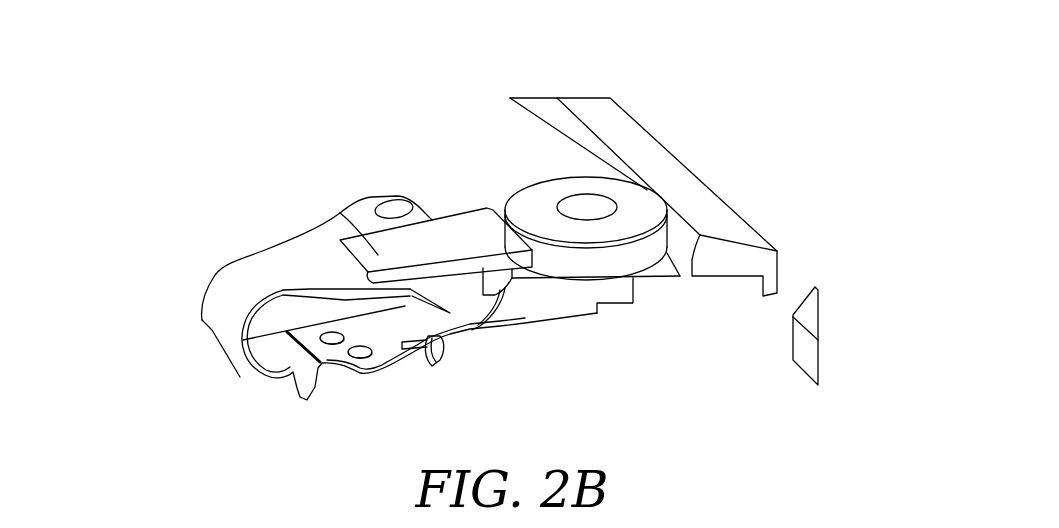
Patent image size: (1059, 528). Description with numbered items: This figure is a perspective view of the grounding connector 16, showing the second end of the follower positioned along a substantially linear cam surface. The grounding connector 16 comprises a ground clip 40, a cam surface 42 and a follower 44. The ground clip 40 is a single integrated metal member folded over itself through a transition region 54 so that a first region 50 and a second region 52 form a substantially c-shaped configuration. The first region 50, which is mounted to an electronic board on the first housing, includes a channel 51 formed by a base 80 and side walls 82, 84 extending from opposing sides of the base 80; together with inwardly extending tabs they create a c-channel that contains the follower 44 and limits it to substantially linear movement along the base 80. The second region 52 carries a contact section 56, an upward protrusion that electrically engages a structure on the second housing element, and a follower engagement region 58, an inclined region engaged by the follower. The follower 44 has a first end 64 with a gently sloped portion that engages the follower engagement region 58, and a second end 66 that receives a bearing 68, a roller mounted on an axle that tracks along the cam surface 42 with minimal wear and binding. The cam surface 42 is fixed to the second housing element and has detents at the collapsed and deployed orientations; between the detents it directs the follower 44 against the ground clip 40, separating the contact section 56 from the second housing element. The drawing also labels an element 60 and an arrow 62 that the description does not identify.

The grounding connector 16 is at (108, 402).
The ground clip 40 is at (212, 329).
The cam surface 42 is at (793, 116).
The follower 44 is at (447, 213).
The first region 50 is at (333, 373).
The channel 51 is at (528, 288).
The second region 52 is at (228, 260).
The transition region 54 is at (207, 292).
The contact section 56 is at (388, 192).
The follower engagement region 58 is at (425, 298).
The wedge 60 is at (791, 339).
The direction arrow 62 is at (816, 269).
The first end 64 is at (340, 213).
The second end 66 is at (630, 190).
The bearing 68 is at (562, 173).
The base 80 is at (465, 307).
The side wall 82 is at (587, 315).
The side wall 84 is at (425, 298).